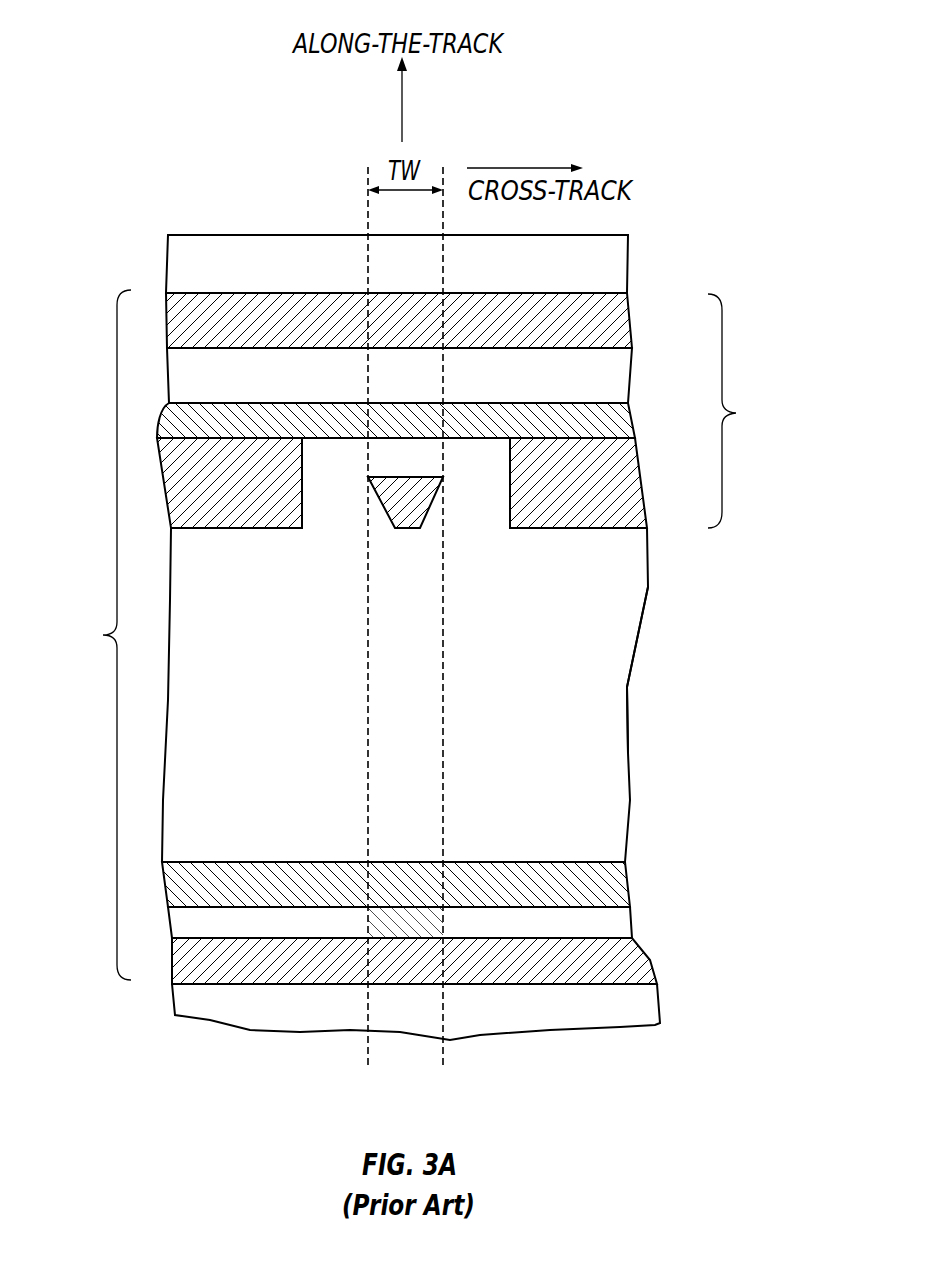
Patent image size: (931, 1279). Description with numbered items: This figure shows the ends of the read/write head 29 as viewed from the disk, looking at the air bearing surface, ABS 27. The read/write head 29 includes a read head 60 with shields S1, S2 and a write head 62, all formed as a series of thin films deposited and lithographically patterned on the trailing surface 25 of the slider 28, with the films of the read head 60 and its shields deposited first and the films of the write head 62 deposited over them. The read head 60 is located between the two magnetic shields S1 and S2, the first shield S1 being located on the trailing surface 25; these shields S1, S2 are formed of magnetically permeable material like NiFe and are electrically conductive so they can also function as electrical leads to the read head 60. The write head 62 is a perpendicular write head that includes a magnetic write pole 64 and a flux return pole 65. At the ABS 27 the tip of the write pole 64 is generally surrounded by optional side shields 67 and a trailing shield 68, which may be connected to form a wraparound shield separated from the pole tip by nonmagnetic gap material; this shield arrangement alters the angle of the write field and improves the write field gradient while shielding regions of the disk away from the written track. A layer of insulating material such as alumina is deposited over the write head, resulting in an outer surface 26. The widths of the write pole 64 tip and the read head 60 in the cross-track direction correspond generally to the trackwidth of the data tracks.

The outer surface 26 is at (612, 270).
The flux return pole 65 is at (610, 320).
The trailing shield 68 is at (618, 420).
The write head 62 is at (740, 411).
The side shields 67 is at (232, 510).
The write pole 64 is at (405, 518).
The slider 28 is at (631, 760).
The air bearing surface (ABS) 27 is at (621, 668).
The second shield S2 is at (608, 890).
The read head 60 is at (436, 927).
The first shield S1 is at (620, 957).
The trailing surface 25 is at (622, 978).
The read/write head 29 is at (99, 635).